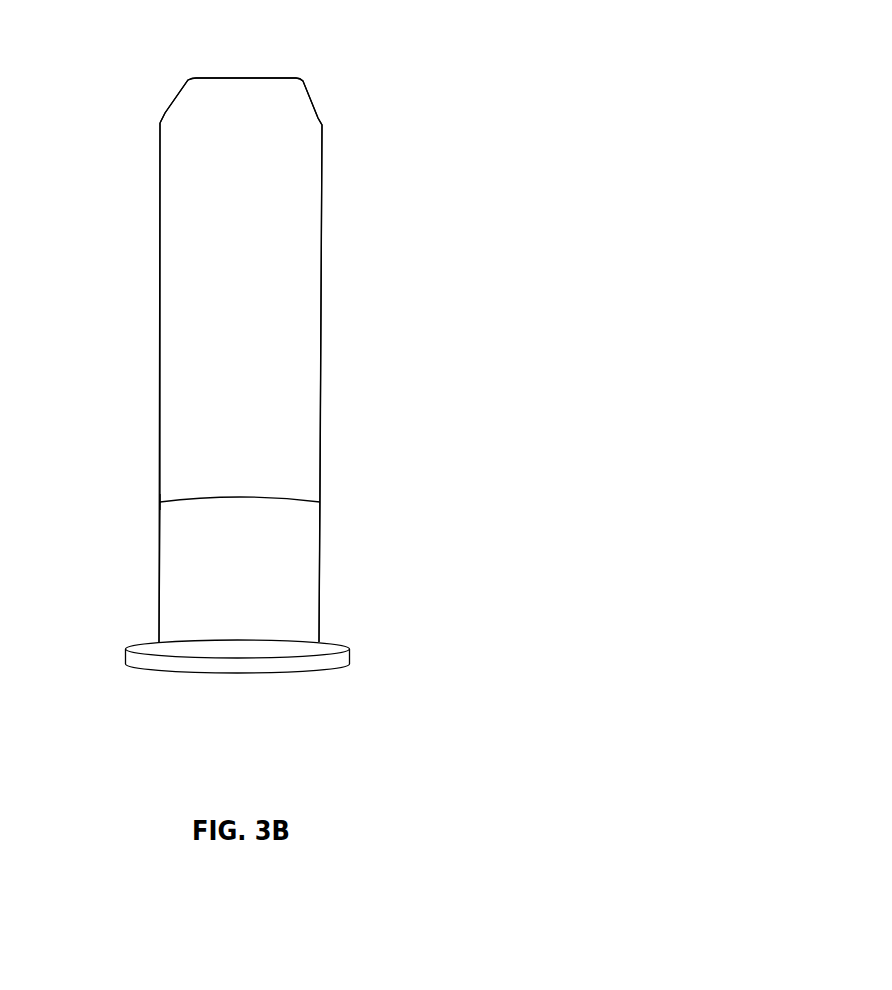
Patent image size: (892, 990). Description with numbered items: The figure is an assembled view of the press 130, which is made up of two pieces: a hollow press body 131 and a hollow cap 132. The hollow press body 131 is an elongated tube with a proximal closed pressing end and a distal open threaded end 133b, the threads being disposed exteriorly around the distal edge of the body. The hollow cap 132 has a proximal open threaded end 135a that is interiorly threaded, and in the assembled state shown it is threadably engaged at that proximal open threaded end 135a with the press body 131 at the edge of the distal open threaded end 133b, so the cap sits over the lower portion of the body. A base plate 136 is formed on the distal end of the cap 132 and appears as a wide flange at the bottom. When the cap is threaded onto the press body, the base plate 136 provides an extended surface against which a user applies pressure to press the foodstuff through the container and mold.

The press 130 is at (519, 91).
The hollow press body 131 is at (346, 279).
The hollow cap 132 is at (367, 559).
The distal open threaded end 133b is at (322, 491).
The proximal open threaded end 135a is at (151, 493).
The base plate 136 is at (339, 642).